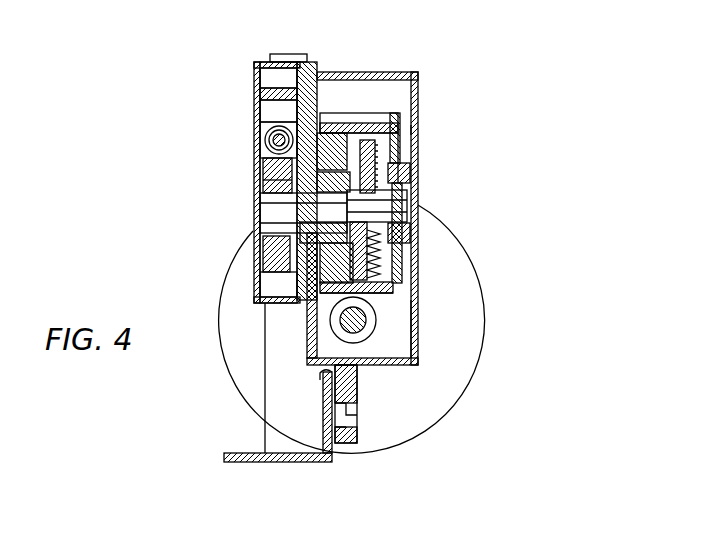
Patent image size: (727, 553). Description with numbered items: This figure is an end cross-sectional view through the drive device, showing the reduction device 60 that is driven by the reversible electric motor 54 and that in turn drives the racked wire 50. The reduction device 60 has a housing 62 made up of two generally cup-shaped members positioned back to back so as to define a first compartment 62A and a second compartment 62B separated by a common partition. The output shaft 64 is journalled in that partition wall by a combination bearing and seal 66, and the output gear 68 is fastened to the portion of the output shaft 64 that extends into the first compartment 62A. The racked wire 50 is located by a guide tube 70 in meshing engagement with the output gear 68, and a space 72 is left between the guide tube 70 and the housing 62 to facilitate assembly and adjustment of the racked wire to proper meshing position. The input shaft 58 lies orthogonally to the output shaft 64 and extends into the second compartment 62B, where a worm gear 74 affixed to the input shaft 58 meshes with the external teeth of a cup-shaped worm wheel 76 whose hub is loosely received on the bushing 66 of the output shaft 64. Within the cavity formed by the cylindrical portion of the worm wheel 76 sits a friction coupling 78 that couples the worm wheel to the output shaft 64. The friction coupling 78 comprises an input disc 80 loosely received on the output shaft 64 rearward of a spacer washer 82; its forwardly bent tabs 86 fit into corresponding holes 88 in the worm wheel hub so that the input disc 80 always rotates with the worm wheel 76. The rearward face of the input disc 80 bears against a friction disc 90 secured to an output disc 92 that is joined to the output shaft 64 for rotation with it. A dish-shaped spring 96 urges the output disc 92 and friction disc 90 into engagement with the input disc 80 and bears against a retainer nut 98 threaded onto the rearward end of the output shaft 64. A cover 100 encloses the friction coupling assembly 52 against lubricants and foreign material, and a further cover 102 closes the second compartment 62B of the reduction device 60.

The racked wire 50 is at (262, 140).
The clutch mechanism 52 is at (435, 125).
The reversible electric motor 54 is at (458, 240).
The input shaft 58 is at (362, 338).
The reduction device 60 is at (374, 72).
The housing 62 is at (345, 112).
The first compartment 62A is at (263, 288).
The second compartment 62B is at (405, 338).
The output shaft 64 is at (270, 213).
The combination bearing and seal 66 is at (285, 183).
The output gear 68 is at (270, 243).
The guide tube 70 is at (258, 137).
The space 72 is at (253, 80).
The worm gear 74 is at (330, 325).
The worm wheel 76 is at (383, 112).
The friction coupling 78 is at (365, 113).
The input disc 80 is at (330, 158).
The spacer washer 82 is at (350, 190).
The forwardly bent tabs 86 is at (330, 313).
The holes 88 is at (265, 103).
The friction disc 90 is at (380, 288).
The output disc 92 is at (372, 263).
The dish-shaped spring 96 is at (358, 155).
The retainer nut 98 is at (398, 168).
The cover 100 is at (398, 125).
The cover 102 is at (440, 120).